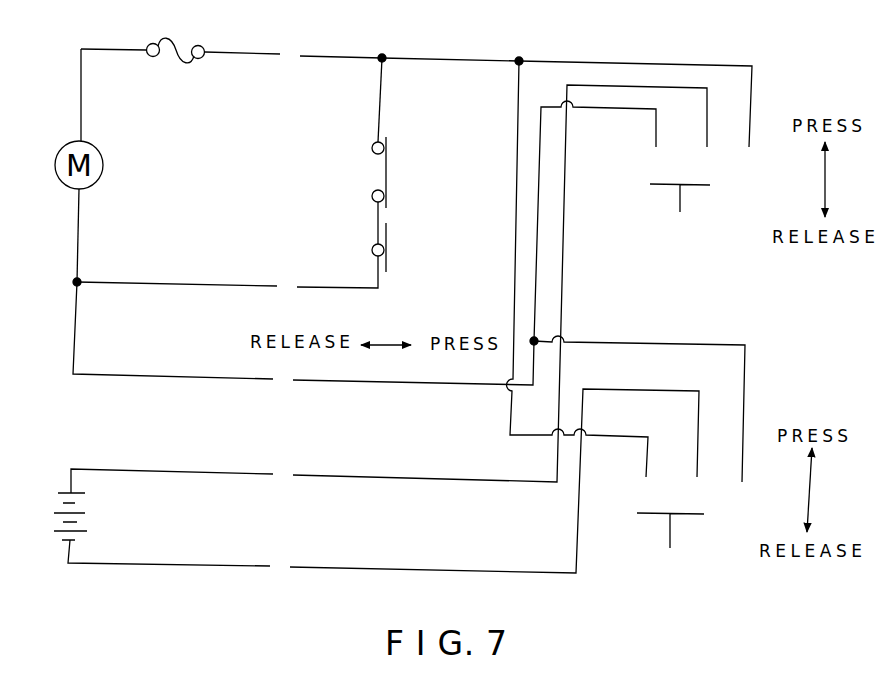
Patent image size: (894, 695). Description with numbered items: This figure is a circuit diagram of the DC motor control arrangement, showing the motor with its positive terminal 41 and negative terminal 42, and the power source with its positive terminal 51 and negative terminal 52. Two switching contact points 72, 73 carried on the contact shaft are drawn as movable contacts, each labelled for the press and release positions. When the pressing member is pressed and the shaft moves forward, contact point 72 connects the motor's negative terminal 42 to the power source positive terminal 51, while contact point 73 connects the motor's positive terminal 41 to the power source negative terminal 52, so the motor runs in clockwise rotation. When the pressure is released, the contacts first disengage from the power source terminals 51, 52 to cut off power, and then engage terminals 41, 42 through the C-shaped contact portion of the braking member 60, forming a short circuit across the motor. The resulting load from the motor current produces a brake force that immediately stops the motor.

The positive terminal 41 is at (420, 269).
The negative terminal 42 is at (412, 301).
The positive terminal 51 is at (394, 289).
The negative terminal 52 is at (387, 484).
The braking member 60 is at (229, 180).
The contact point 72 is at (384, 250).
The contact point 73 is at (386, 176).